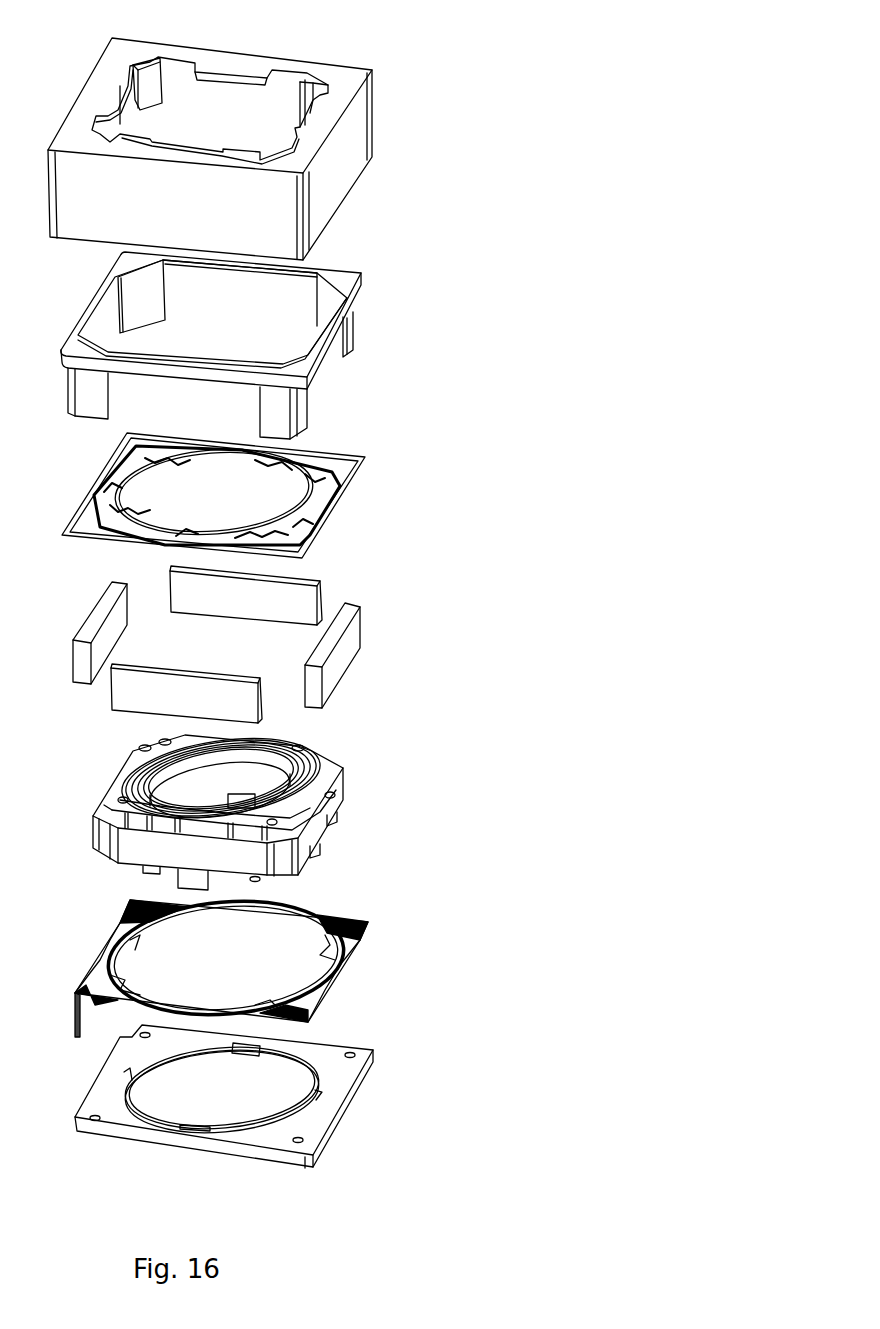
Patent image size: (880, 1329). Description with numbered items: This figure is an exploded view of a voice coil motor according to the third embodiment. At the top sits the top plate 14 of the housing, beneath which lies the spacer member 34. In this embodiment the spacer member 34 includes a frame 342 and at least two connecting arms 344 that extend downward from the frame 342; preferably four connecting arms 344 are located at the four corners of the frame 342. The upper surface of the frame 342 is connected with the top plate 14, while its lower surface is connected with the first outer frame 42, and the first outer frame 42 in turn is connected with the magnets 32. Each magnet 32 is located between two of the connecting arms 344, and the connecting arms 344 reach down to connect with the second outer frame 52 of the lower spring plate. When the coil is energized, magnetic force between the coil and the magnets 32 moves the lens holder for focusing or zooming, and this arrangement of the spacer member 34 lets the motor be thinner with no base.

The top plate 14 is at (335, 77).
The spacer member 34 is at (301, 345).
The frame 342 is at (340, 312).
The connecting arms 344 is at (303, 410).
The first outer frame 42 is at (337, 502).
The magnets 32 is at (343, 648).
The second outer frame 52 is at (357, 935).